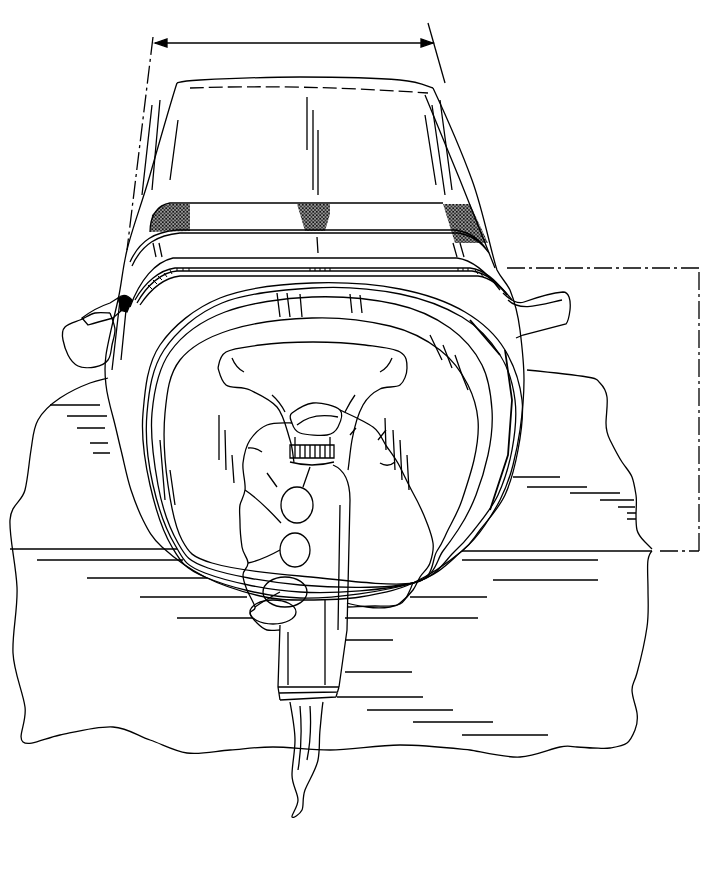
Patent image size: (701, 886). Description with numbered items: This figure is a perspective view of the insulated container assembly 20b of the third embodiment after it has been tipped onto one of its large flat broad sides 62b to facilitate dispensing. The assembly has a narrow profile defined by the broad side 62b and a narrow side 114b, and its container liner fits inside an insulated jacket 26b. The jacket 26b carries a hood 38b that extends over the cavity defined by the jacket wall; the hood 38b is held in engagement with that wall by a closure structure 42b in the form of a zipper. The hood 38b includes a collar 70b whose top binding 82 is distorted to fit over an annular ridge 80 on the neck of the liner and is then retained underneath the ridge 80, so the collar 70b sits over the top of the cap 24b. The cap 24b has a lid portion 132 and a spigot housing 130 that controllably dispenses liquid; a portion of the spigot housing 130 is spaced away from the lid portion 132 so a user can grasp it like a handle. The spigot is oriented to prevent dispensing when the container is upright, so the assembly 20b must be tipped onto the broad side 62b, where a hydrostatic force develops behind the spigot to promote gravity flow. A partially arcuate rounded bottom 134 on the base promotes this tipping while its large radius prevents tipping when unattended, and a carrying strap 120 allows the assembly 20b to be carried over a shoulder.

The insulated container assembly 20b is at (553, 100).
The insulated jacket 26b is at (134, 150).
The rounded bottom 134 is at (247, 74).
The broad side 62b is at (305, 43).
The hood 38b is at (135, 283).
The closure structure 42b is at (138, 290).
The top binding 82 is at (436, 311).
The annular ridge 80 is at (522, 368).
The collar 70b is at (496, 403).
The cap 24b is at (466, 445).
The narrow side 114b is at (700, 463).
The lid portion 132 is at (463, 508).
The spigot housing 130 is at (270, 666).
The carrying strap 120 is at (72, 343).